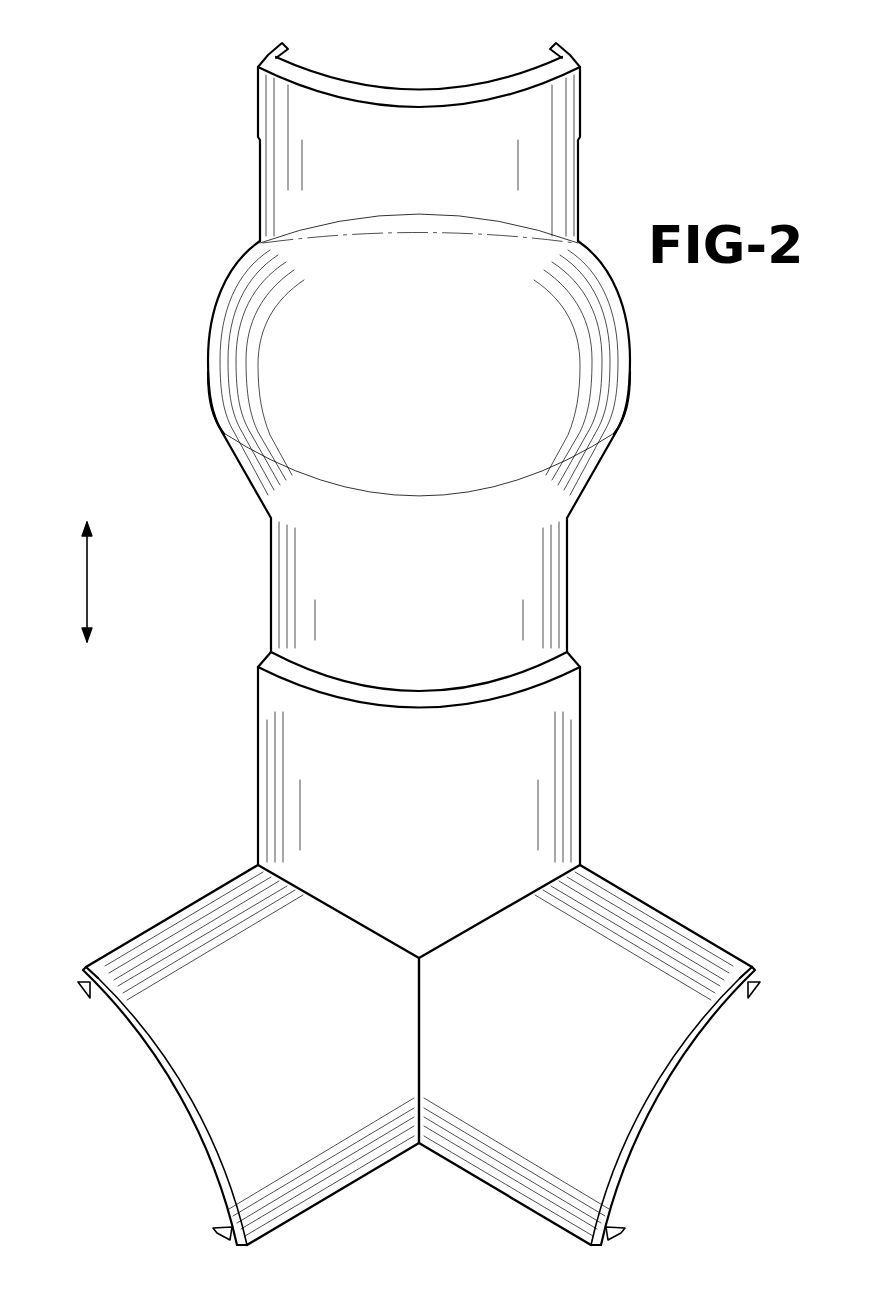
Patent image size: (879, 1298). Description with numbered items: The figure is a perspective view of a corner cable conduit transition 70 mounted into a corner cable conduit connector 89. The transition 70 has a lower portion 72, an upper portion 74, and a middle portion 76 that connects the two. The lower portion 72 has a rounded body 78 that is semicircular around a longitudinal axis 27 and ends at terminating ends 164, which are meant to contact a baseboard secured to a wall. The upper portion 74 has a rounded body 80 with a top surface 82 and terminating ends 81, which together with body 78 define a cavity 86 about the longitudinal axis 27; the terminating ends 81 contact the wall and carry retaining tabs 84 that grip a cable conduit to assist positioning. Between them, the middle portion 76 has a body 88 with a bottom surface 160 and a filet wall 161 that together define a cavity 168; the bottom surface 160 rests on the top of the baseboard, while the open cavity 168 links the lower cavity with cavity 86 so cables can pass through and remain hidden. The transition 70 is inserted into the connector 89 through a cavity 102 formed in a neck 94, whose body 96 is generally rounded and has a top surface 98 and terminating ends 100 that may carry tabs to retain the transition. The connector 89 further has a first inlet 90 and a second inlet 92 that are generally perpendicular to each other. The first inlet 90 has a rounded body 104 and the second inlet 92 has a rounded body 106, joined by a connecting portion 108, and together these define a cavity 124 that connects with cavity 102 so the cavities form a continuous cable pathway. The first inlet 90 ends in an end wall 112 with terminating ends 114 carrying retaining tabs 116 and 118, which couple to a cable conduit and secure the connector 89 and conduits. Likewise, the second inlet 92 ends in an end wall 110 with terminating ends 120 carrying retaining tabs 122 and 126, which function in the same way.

The longitudinal axis 27 is at (87, 580).
The corner cable conduit transition 70 is at (230, 249).
The lower portion 72 is at (407, 585).
The upper portion 74 is at (398, 128).
The middle portion 76 is at (410, 366).
The rounded body 78 is at (342, 590).
The rounded body 80 is at (322, 138).
The terminating ends 81 is at (258, 170).
The top surface 82 is at (341, 78).
The retaining tabs 84 is at (278, 47).
The cavity 86 is at (366, 80).
The body 88 is at (318, 308).
The corner cable conduit connector 89 is at (103, 943).
The first inlet 90 is at (615, 1060).
The second inlet 92 is at (384, 1062).
The neck 94 is at (413, 743).
The body 96 is at (342, 768).
The top surface 98 is at (390, 688).
The terminating ends 100 is at (582, 762).
The cavity 102 is at (421, 685).
The rounded body 104 is at (605, 977).
The rounded body 106 is at (235, 977).
The connecting portion 108 is at (418, 1015).
The end wall 110 is at (160, 1055).
The end wall 112 is at (683, 1055).
The terminating ends 114 is at (606, 881).
The retaining tab 116 is at (762, 995).
The retaining tab 118 is at (624, 1240).
The terminating ends 120 is at (234, 881).
The retaining tab 122 is at (215, 1240).
The cavity 124 is at (188, 1118).
The retaining tab 126 is at (78, 995).
The bottom surface 160 is at (217, 426).
The filet wall 161 is at (248, 480).
The terminating ends 164 is at (270, 545).
The cavity 168 is at (325, 352).